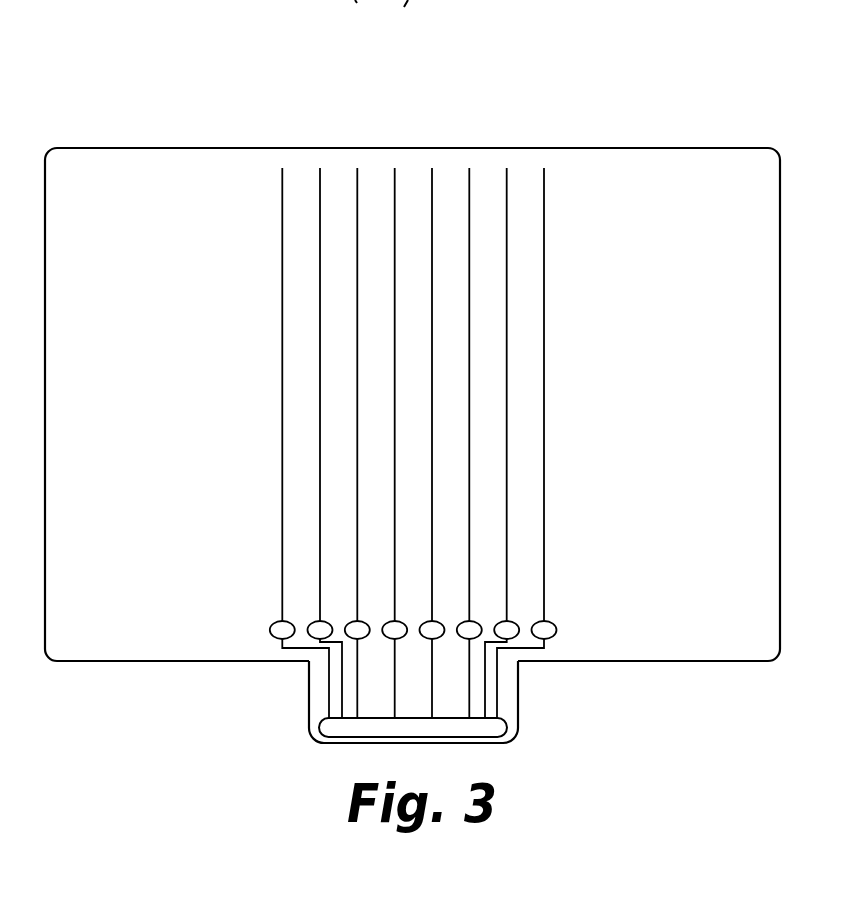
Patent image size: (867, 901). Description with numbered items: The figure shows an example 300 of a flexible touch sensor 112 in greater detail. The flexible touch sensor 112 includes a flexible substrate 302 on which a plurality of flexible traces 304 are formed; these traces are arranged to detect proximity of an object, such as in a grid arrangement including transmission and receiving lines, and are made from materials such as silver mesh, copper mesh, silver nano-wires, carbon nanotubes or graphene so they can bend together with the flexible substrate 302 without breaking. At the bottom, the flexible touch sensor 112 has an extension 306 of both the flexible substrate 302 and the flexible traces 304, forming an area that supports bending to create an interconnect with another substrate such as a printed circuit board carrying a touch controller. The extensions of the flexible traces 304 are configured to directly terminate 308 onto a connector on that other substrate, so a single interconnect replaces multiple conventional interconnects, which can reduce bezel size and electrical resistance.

The example of the flexible touch sensor 300 is at (141, 72).
The flexible touch sensor 112 is at (653, 119).
The flexible substrate 302 is at (139, 148).
The flexible traces 304 is at (573, 200).
The extension 306 is at (309, 692).
The direct termination 308 is at (356, 732).